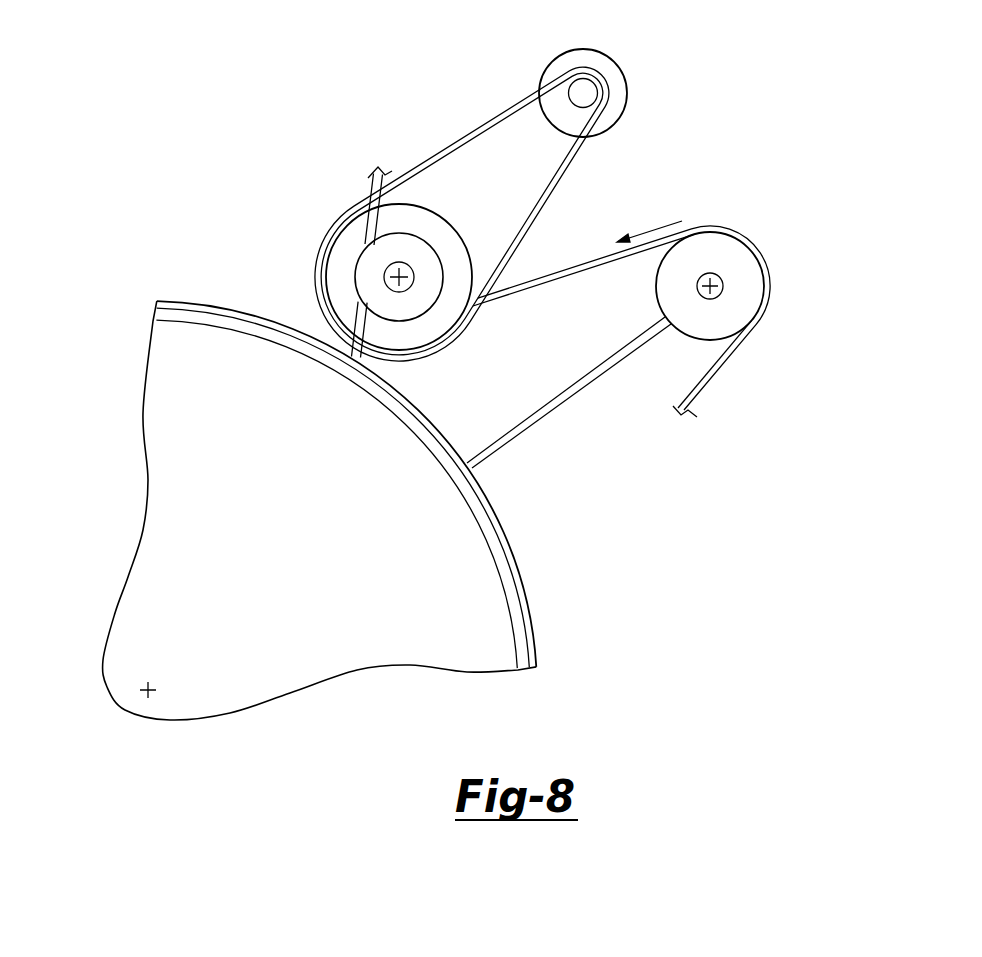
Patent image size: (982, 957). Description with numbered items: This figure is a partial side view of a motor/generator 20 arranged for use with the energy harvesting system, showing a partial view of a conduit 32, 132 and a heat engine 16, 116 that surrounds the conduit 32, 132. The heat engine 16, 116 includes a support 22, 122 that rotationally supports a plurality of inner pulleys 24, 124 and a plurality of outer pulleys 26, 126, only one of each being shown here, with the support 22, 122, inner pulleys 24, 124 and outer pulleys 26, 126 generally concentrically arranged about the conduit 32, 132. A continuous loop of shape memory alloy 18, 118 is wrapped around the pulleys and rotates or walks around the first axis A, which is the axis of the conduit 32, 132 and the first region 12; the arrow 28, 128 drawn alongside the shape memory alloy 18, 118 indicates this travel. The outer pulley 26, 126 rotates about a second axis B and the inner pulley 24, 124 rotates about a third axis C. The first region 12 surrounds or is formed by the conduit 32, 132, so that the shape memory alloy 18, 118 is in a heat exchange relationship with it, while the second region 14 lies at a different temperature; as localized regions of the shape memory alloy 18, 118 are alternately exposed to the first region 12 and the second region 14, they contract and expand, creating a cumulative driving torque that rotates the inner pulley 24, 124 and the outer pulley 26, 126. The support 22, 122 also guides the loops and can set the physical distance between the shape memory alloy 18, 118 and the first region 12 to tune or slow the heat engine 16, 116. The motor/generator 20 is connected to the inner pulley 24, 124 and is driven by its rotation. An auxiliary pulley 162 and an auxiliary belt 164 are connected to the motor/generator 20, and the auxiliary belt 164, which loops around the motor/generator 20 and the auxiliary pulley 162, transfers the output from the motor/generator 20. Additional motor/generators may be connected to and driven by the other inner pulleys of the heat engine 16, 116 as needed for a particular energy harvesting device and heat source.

The first region 12 is at (366, 498).
The second region 14 is at (839, 344).
The heat engine 16 is at (381, 205).
The heat engine 116 is at (279, 145).
The shape memory alloy 18 is at (618, 322).
The shape memory alloy 118 is at (586, 262).
The motor/generator 20 is at (441, 217).
The support 22 is at (347, 472).
The supports 122 is at (343, 352).
The inner pulleys 24 is at (346, 253).
The inner pulleys 124 is at (373, 240).
The outer pulleys 26 is at (760, 297).
The outer pulleys 126 is at (752, 278).
The belt travel direction 28 is at (682, 203).
The belt travel direction 128 is at (668, 221).
The conduit 32 is at (393, 488).
The conduit 132 is at (500, 553).
The auxiliary pulley 162 is at (541, 92).
The auxiliary belt 164 is at (483, 124).
The first axis A is at (155, 686).
The second axes B is at (700, 295).
The third axes C is at (387, 268).